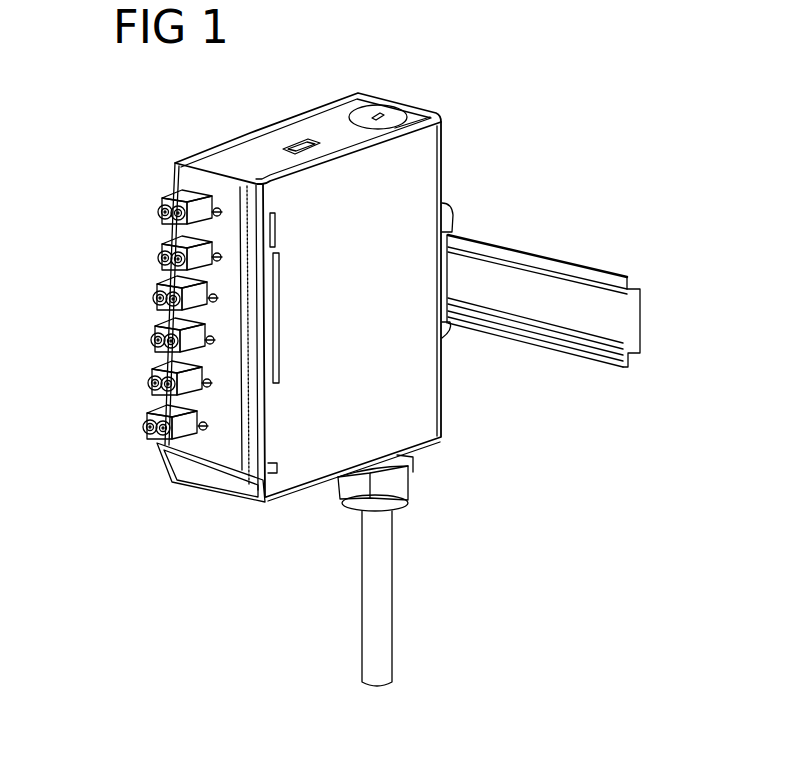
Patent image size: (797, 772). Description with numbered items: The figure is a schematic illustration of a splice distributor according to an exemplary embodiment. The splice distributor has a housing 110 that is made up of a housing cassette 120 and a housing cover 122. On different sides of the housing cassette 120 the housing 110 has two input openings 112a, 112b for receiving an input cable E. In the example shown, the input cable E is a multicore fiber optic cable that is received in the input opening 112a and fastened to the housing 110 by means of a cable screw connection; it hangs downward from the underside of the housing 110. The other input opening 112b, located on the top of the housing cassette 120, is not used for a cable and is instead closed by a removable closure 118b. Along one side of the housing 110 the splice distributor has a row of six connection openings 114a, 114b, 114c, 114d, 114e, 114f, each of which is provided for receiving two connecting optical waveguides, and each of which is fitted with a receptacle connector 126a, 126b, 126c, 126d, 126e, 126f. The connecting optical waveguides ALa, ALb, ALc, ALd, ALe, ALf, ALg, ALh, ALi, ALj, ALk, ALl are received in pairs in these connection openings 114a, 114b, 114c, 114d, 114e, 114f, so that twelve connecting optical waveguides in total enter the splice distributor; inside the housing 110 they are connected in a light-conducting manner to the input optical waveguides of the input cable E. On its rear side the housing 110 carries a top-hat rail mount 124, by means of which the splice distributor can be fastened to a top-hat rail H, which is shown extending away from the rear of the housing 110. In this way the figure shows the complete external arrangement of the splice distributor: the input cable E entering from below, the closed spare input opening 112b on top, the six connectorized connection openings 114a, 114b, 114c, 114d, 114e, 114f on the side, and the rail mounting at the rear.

The housing 110 is at (243, 137).
The housing cassette 120 is at (318, 120).
The input opening 112b is at (370, 108).
The removable closure 118b is at (403, 122).
The top-hat rail mount 124 is at (449, 212).
The top-hat rail H is at (590, 270).
The housing cover 122 is at (428, 408).
The input opening 112a is at (410, 450).
The input cable E is at (383, 630).
The connection opening 114a is at (182, 189).
The connection opening 114b is at (172, 236).
The connection opening 114c is at (155, 276).
The connection opening 114d is at (162, 318).
The connection opening 114e is at (200, 363).
The connection opening 114f is at (190, 407).
The receptacle connector 126a is at (222, 211).
The receptacle connector 126b is at (222, 256).
The receptacle connector 126c is at (218, 298).
The receptacle connector 126d is at (215, 340).
The receptacle connector 126e is at (212, 383).
The receptacle connector 126f is at (208, 426).
The connecting optical waveguide ALa is at (160, 206).
The connecting optical waveguide ALb is at (158, 213).
The connecting optical waveguide ALc is at (158, 256).
The connecting optical waveguide ALd is at (174, 262).
The connecting optical waveguide ALe is at (153, 299).
The connecting optical waveguide ALf is at (168, 305).
The connecting optical waveguide ALg is at (151, 341).
The connecting optical waveguide ALh is at (167, 347).
The connecting optical waveguide ALi is at (148, 384).
The connecting optical waveguide ALj is at (163, 391).
The connecting optical waveguide ALk is at (143, 428).
The connecting optical waveguide ALl is at (158, 436).